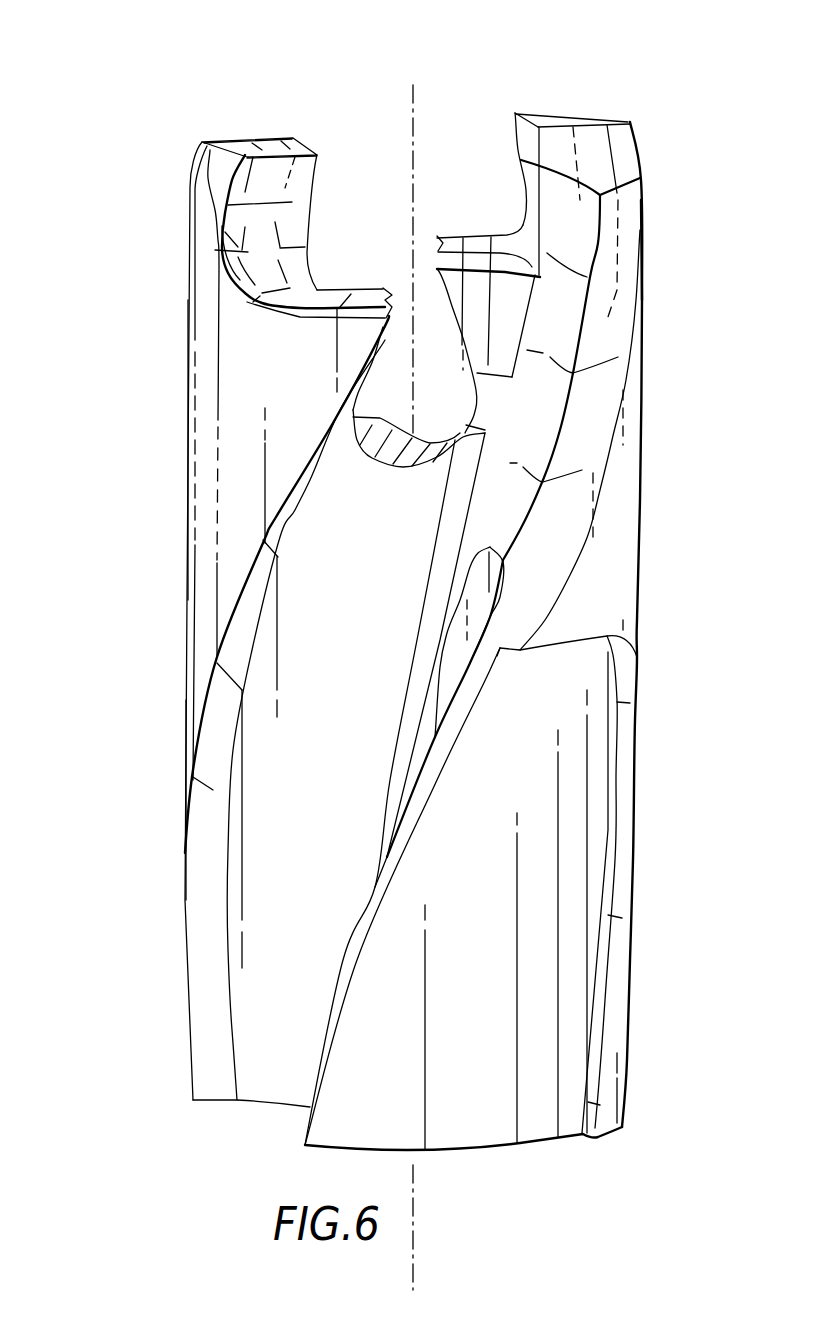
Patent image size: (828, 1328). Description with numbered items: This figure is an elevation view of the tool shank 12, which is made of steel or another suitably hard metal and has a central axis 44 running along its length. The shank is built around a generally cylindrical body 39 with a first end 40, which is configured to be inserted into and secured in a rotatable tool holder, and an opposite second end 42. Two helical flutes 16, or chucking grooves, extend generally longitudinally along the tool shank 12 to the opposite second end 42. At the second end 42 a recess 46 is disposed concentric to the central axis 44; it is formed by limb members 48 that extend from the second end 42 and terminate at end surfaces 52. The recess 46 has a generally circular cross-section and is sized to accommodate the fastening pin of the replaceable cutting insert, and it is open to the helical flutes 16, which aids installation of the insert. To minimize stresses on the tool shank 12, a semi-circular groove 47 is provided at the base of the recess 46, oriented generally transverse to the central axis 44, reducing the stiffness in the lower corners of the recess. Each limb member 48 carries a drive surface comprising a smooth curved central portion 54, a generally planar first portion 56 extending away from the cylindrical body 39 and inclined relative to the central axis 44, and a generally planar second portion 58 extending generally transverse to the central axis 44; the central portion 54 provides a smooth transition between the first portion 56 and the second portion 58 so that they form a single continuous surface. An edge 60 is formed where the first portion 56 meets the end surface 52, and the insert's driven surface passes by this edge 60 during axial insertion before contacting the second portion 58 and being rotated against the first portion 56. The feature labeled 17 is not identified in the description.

The tool shank 12 is at (154, 93).
The opposite second end 42 is at (455, 95).
The central axis 44 is at (413, 123).
The recess 46 is at (396, 258).
The semi-circular groove 47 is at (433, 418).
The limb members 48 is at (205, 265).
The end surfaces 52 is at (243, 143).
The central portion 54 is at (238, 251).
The first portion 56 is at (248, 173).
The second portion 58 is at (337, 262).
The edge 60 is at (282, 150).
The slot 17 is at (480, 596).
The helical flutes 16 is at (215, 847).
The cylindrical body 39 is at (533, 850).
The first end 40 is at (436, 1180).